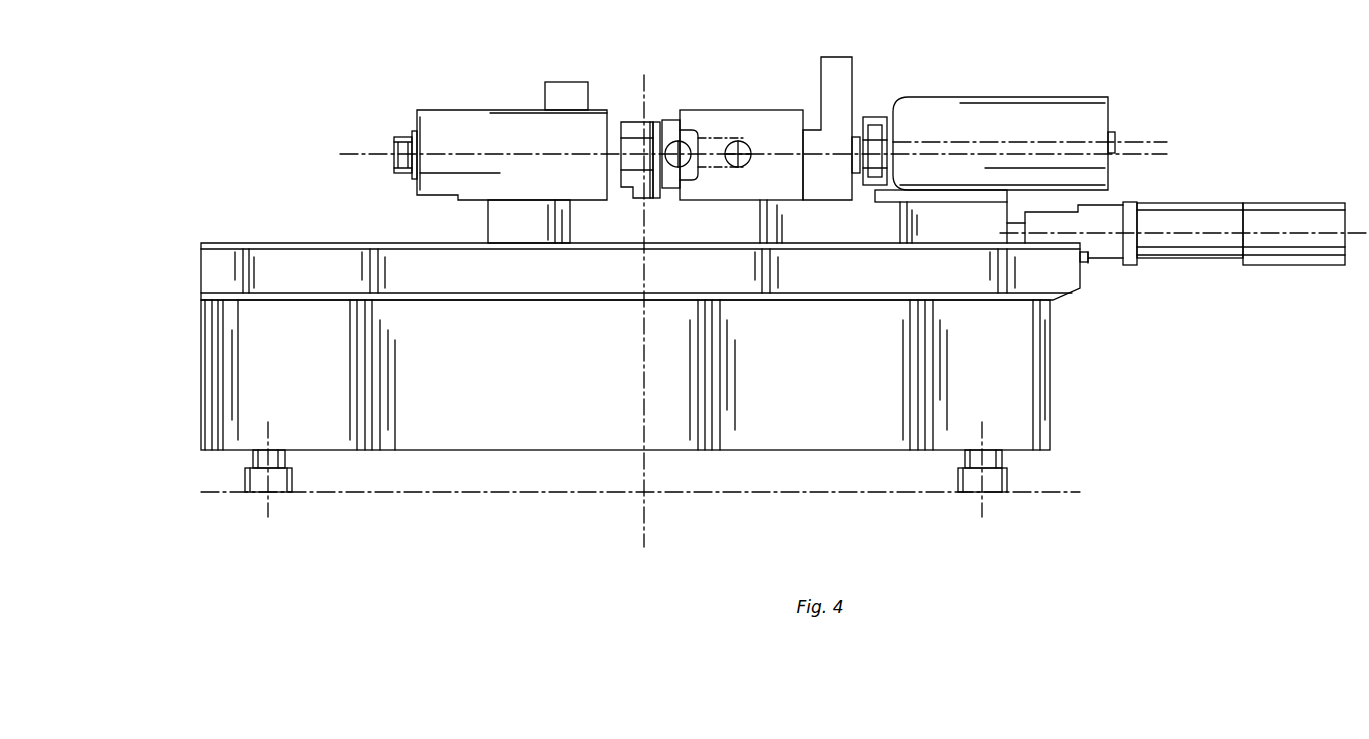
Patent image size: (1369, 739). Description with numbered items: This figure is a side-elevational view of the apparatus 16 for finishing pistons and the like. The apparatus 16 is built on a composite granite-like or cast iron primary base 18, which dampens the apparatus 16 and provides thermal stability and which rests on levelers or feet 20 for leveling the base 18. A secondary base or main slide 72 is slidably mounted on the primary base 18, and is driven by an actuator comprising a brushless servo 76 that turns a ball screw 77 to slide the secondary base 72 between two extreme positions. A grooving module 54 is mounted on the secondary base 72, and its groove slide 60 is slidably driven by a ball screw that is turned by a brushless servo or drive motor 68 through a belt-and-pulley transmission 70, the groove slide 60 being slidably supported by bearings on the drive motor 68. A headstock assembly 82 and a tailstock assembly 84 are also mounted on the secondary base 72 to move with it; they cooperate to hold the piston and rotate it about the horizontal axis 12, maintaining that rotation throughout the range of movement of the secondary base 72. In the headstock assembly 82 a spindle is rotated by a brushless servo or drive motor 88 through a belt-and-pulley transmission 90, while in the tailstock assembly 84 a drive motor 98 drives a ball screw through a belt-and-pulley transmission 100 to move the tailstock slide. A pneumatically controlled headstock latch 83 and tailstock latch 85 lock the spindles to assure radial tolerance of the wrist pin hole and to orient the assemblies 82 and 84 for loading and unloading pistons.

The horizontal axis 12 is at (378, 152).
The apparatus 16 is at (1118, 62).
The primary base 18 is at (1060, 298).
The levelers or feet 20 is at (292, 485).
The grooving module 54 is at (717, 110).
The groove slide 60 is at (640, 192).
The drive motor 68 is at (735, 115).
The belt-and-pulley transmission 70 is at (703, 139).
The secondary base or main slide 72 is at (997, 218).
The brushless servo 76 is at (1173, 203).
The ball screw 77 is at (1020, 236).
The headstock assembly 82 is at (973, 96).
The headstock latch 83 is at (833, 57).
The tailstock assembly 84 is at (507, 110).
The tailstock latch 85 is at (563, 82).
The drive motor 88 is at (1025, 110).
The belt-and-pulley transmission 90 is at (877, 117).
The drive motor 98 is at (455, 182).
The belt-and-pulley transmission 100 is at (395, 174).